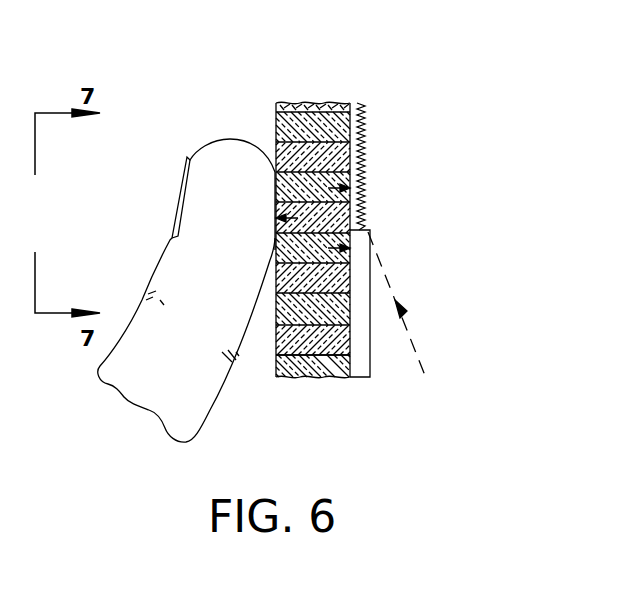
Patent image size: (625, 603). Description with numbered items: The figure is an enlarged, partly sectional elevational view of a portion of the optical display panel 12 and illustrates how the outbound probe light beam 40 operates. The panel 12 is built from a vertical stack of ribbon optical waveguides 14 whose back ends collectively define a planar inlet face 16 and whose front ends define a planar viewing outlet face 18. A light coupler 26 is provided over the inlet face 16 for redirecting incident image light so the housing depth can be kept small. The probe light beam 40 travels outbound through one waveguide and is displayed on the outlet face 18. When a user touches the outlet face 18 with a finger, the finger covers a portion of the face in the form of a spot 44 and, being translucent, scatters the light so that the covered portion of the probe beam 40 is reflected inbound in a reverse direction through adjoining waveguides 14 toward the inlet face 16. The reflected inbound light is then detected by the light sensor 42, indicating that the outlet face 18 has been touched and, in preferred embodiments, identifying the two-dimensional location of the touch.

The optical display panel 12 is at (310, 227).
The ribbon optical waveguides 14 is at (303, 365).
The inlet face 16 is at (355, 118).
The outlet face 18 is at (275, 117).
The light coupler 26 is at (366, 112).
The outbound probe light beam 40 is at (410, 340).
The light sensor 42 is at (371, 362).
The spot 44 is at (276, 238).